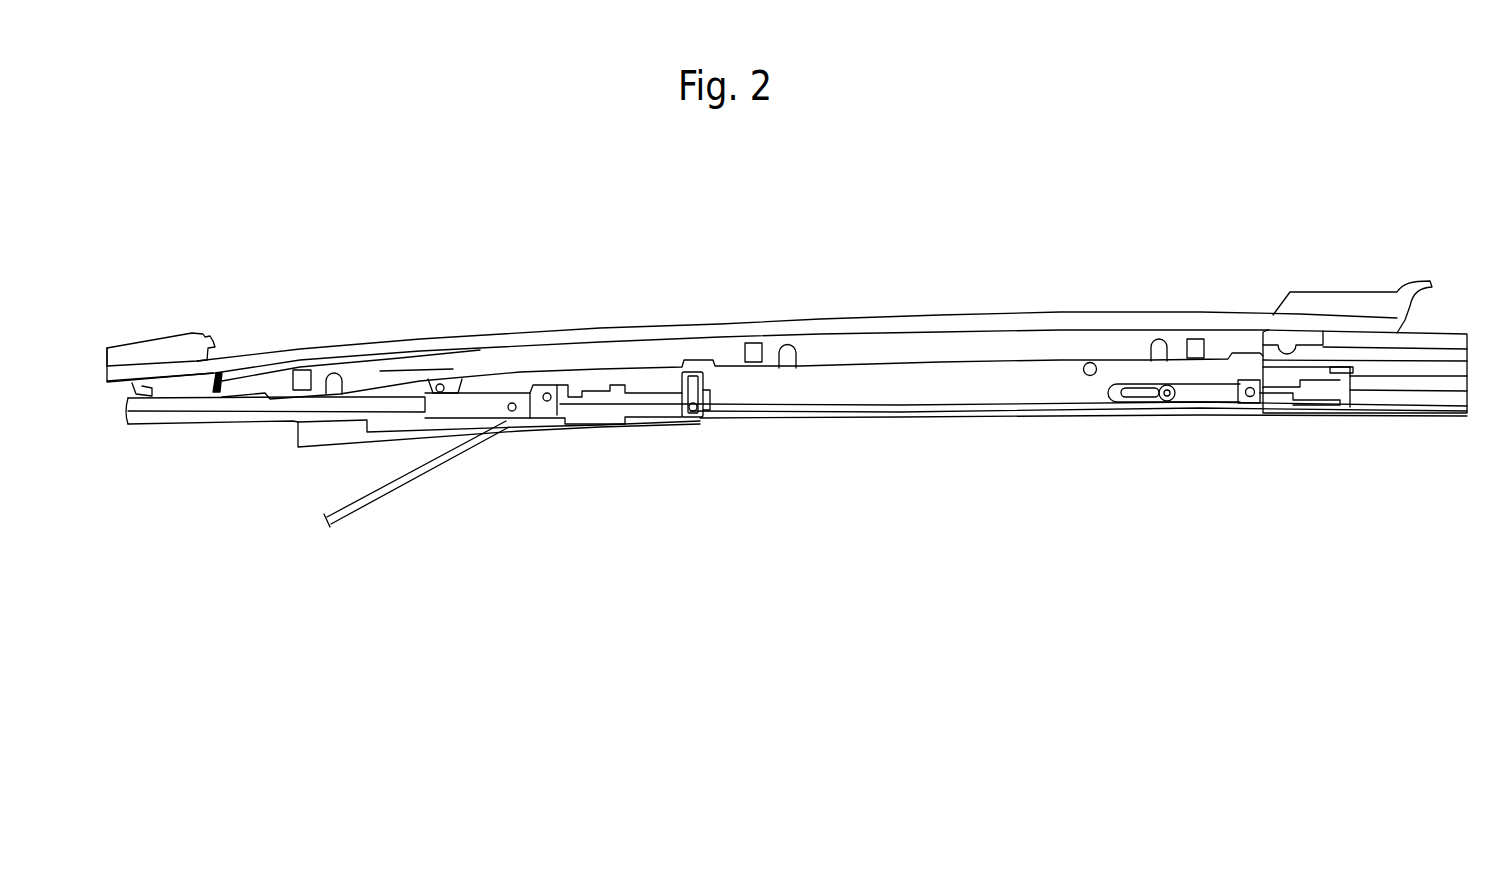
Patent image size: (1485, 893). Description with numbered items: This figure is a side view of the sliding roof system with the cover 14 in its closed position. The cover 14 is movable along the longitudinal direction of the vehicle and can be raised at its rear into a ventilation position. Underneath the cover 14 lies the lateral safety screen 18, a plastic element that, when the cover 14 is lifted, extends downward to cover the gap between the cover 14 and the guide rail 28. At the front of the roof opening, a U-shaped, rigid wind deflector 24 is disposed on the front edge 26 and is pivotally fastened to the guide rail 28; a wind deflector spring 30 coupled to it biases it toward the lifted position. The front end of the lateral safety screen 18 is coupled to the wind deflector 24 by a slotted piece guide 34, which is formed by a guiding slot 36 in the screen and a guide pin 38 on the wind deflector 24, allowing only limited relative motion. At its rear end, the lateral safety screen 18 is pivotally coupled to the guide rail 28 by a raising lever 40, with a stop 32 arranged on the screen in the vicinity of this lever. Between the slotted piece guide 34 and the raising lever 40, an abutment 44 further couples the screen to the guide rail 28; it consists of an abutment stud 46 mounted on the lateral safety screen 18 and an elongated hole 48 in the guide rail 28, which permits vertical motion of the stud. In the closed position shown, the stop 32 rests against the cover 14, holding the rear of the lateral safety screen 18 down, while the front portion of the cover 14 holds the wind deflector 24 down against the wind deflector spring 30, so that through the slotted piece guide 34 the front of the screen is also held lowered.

The cover 14 is at (735, 321).
The lateral safety screen 18 is at (905, 394).
The wind deflector 24 is at (176, 405).
The front edge 26 is at (127, 346).
The guide rail 28 is at (1410, 398).
The wind deflector spring 30 is at (401, 484).
The stop 32 is at (1087, 377).
The slotted piece guide 34 is at (497, 250).
The guiding slot 36 is at (457, 381).
The guide pin 38 is at (436, 384).
The raising lever 40 is at (1200, 394).
The abutment 44 is at (743, 500).
The abutment stud 46 is at (694, 412).
The elongated hole 48 is at (683, 398).